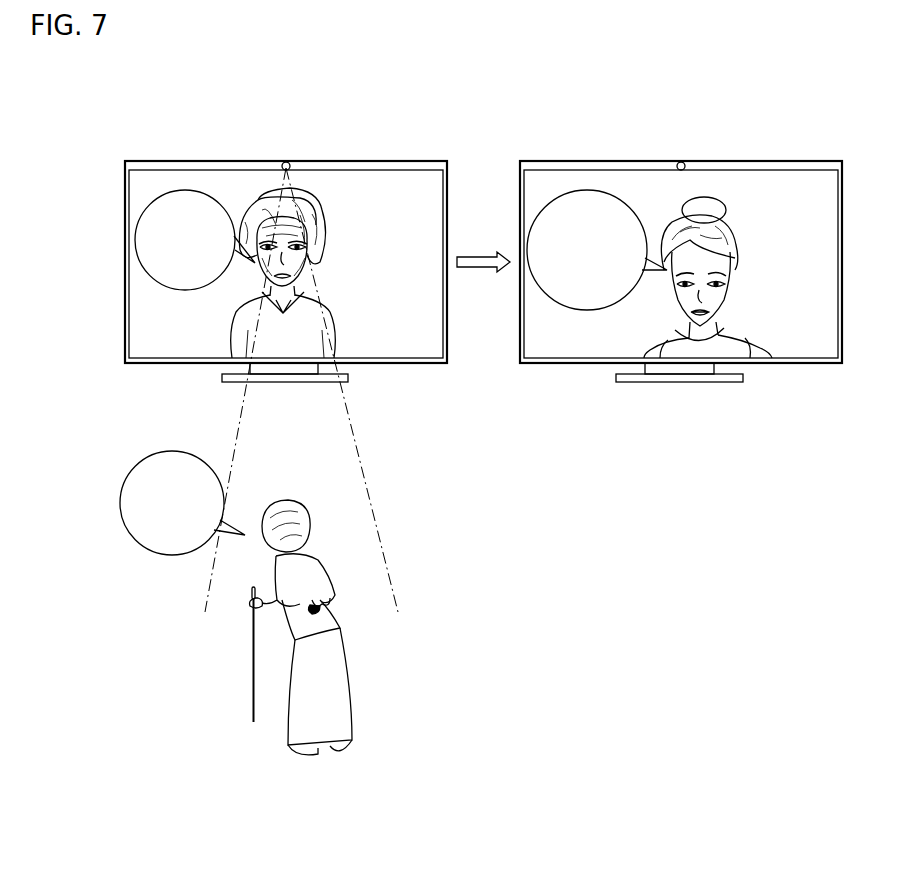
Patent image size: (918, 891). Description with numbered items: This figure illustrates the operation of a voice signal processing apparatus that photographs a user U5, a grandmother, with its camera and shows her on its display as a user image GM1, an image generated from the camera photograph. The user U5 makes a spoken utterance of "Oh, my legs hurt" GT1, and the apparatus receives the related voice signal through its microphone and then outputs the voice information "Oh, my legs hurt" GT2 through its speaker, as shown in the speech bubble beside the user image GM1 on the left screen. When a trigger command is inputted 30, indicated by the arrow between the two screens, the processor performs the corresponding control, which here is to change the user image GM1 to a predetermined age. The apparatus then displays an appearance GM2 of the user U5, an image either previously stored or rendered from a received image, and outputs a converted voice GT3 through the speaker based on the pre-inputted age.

The user image GM1 is at (318, 200).
The appearance of the user GM2 is at (710, 203).
The spoken utterance GT1 is at (178, 555).
The voice information GT2 is at (190, 292).
The converted voice GT3 is at (607, 310).
The trigger command input 30 is at (478, 272).
The user U5 is at (338, 690).